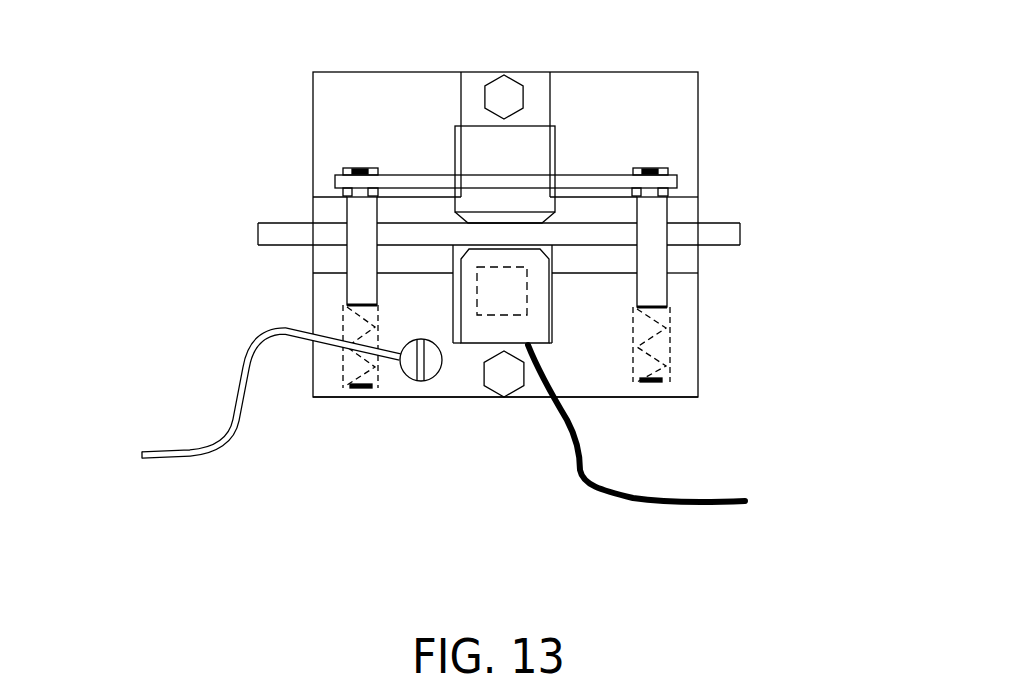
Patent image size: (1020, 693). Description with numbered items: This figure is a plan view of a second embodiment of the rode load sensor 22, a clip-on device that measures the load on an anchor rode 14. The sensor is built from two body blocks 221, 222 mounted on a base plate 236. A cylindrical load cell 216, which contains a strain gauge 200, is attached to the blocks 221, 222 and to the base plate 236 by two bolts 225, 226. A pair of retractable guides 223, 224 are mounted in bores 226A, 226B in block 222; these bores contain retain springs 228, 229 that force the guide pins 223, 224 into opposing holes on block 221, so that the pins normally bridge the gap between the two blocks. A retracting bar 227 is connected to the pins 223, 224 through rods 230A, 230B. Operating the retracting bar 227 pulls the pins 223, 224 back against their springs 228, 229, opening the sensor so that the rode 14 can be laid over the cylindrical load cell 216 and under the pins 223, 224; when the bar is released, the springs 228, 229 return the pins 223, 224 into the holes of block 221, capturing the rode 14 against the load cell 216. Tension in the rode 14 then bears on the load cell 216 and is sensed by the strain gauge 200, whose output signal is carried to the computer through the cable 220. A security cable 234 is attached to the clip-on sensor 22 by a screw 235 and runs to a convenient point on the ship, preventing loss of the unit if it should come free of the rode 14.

The rode 14 is at (220, 233).
The rode load sensor 22 is at (322, 489).
The strain gauge 200 is at (492, 297).
The cylindrical load cell 216 is at (482, 152).
The cable 220 is at (682, 505).
The body block 221 is at (663, 93).
The body block 222 is at (593, 378).
The retractable guide 223 is at (653, 253).
The retractable guide 224 is at (352, 255).
The bolt 225 is at (507, 92).
The bolt 226 is at (497, 380).
The bore 226A is at (345, 313).
The bore 226B is at (668, 318).
The retracting bar 227 is at (340, 173).
The retain spring 228 is at (660, 333).
The retain spring 229 is at (350, 380).
The rod 230A is at (352, 167).
The rod 230B is at (663, 165).
The security cable 234 is at (200, 447).
The screw 235 is at (408, 367).
The base plate 236 is at (320, 213).